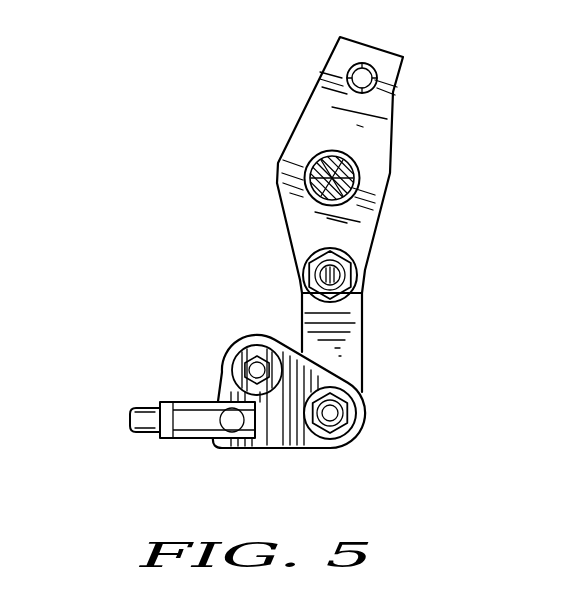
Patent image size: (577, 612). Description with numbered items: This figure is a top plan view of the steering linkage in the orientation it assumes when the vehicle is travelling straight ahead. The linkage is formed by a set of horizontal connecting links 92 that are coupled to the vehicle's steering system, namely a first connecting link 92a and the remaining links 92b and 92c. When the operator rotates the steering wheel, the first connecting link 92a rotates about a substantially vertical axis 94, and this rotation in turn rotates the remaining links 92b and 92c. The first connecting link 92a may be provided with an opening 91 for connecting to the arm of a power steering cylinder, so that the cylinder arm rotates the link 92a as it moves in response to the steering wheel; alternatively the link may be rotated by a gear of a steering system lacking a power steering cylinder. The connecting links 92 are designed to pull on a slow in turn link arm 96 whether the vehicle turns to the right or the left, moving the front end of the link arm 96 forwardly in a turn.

The opening 91 is at (362, 78).
The connecting links 92 is at (412, 252).
The first connecting link 92a is at (303, 113).
The connecting link 92b is at (362, 333).
The connecting link 92c is at (308, 448).
The substantially vertical axis 94 is at (346, 174).
The slow in turn link arm 96 is at (176, 400).